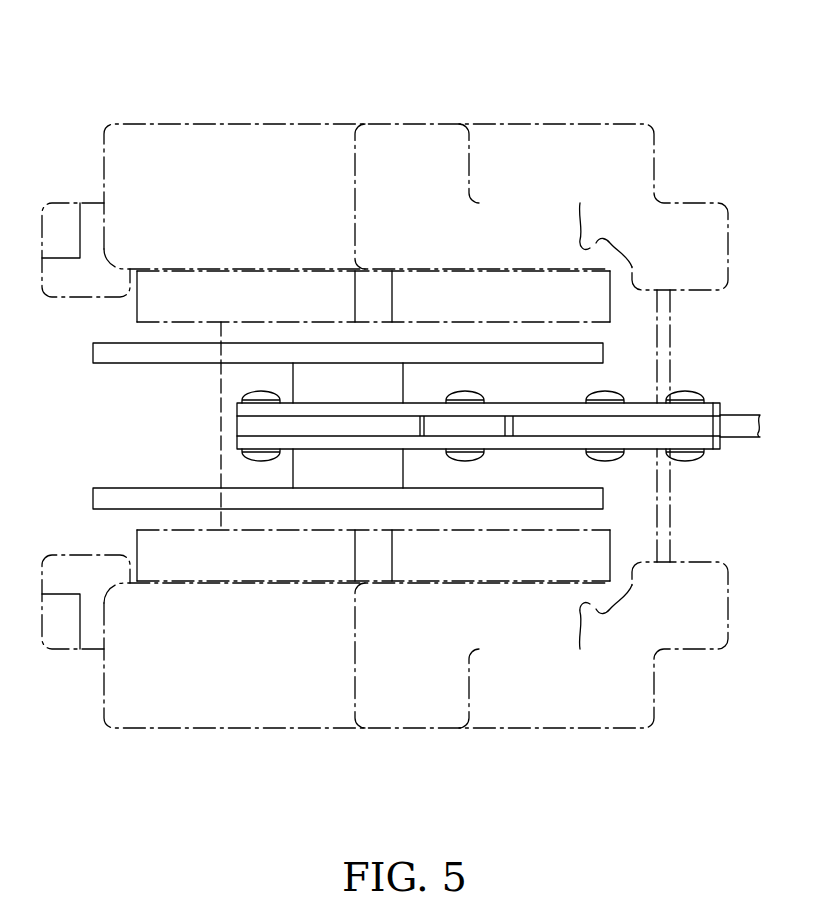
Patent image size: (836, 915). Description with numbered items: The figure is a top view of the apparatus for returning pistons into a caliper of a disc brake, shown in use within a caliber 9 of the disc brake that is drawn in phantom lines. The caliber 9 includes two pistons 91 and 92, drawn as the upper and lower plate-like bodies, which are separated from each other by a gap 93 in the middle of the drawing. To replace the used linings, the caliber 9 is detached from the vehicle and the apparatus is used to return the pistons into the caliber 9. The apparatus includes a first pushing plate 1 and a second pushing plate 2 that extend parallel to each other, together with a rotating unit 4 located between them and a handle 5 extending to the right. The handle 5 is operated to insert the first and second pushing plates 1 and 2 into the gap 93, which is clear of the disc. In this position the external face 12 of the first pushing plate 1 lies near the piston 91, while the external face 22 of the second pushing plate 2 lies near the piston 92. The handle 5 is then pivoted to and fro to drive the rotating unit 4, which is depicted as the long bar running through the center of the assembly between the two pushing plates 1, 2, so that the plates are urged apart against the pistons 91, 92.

The caliber 9 is at (152, 124).
The piston 91 is at (136, 538).
The piston 92 is at (134, 307).
The gap 93 is at (155, 432).
The first pushing plate 1 is at (93, 352).
The external face 12 is at (120, 343).
The second pushing plate 2 is at (93, 500).
The external face 22 is at (120, 508).
The rotating unit 4 is at (493, 395).
The handle 5 is at (743, 418).